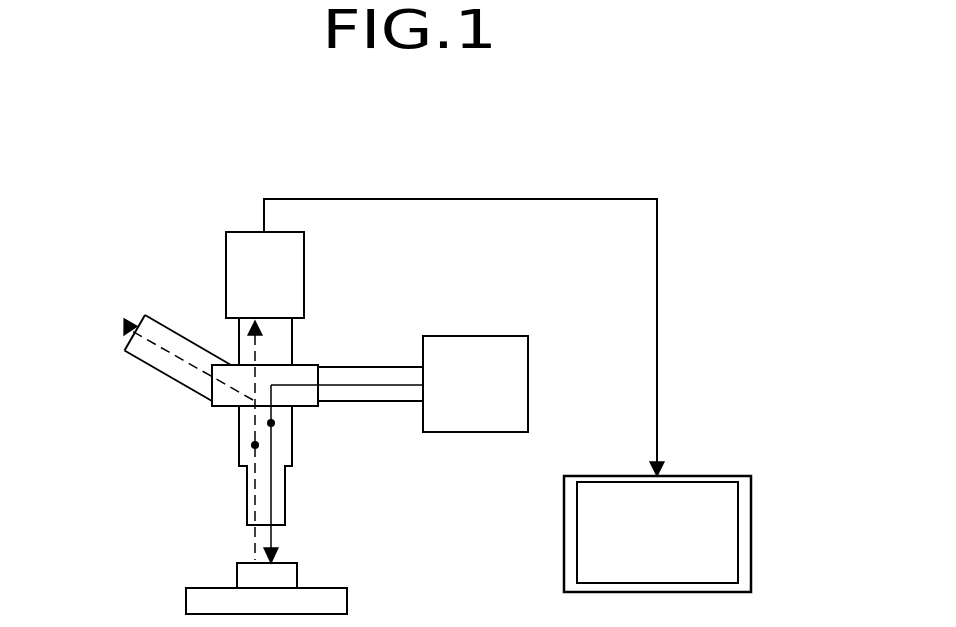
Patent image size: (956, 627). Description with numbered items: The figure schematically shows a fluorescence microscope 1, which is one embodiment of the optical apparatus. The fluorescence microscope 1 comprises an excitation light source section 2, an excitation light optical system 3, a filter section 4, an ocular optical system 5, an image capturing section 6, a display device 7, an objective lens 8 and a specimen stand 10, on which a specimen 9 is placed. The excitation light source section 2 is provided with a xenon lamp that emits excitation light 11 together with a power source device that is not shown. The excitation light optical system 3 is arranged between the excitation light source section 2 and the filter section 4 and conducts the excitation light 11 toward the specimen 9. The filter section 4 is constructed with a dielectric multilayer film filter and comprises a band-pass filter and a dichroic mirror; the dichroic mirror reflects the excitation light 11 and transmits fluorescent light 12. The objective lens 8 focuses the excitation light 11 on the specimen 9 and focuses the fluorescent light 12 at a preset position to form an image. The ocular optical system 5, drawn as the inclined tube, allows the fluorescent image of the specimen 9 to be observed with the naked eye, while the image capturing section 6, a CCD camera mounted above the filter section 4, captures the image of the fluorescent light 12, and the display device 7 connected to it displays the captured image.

The fluorescence microscope 1 is at (130, 225).
The excitation light source section 2 is at (498, 340).
The excitation light optical system 3 is at (358, 366).
The filter section 4 is at (298, 368).
The ocular optical system 5 is at (140, 318).
The image capturing section 6 is at (238, 250).
The display device 7 is at (725, 477).
The objective lens 8 is at (246, 508).
The specimen 9 is at (287, 565).
The specimen stand 10 is at (193, 602).
The excitation light 11 is at (275, 423).
The fluorescent light 12 is at (251, 445).